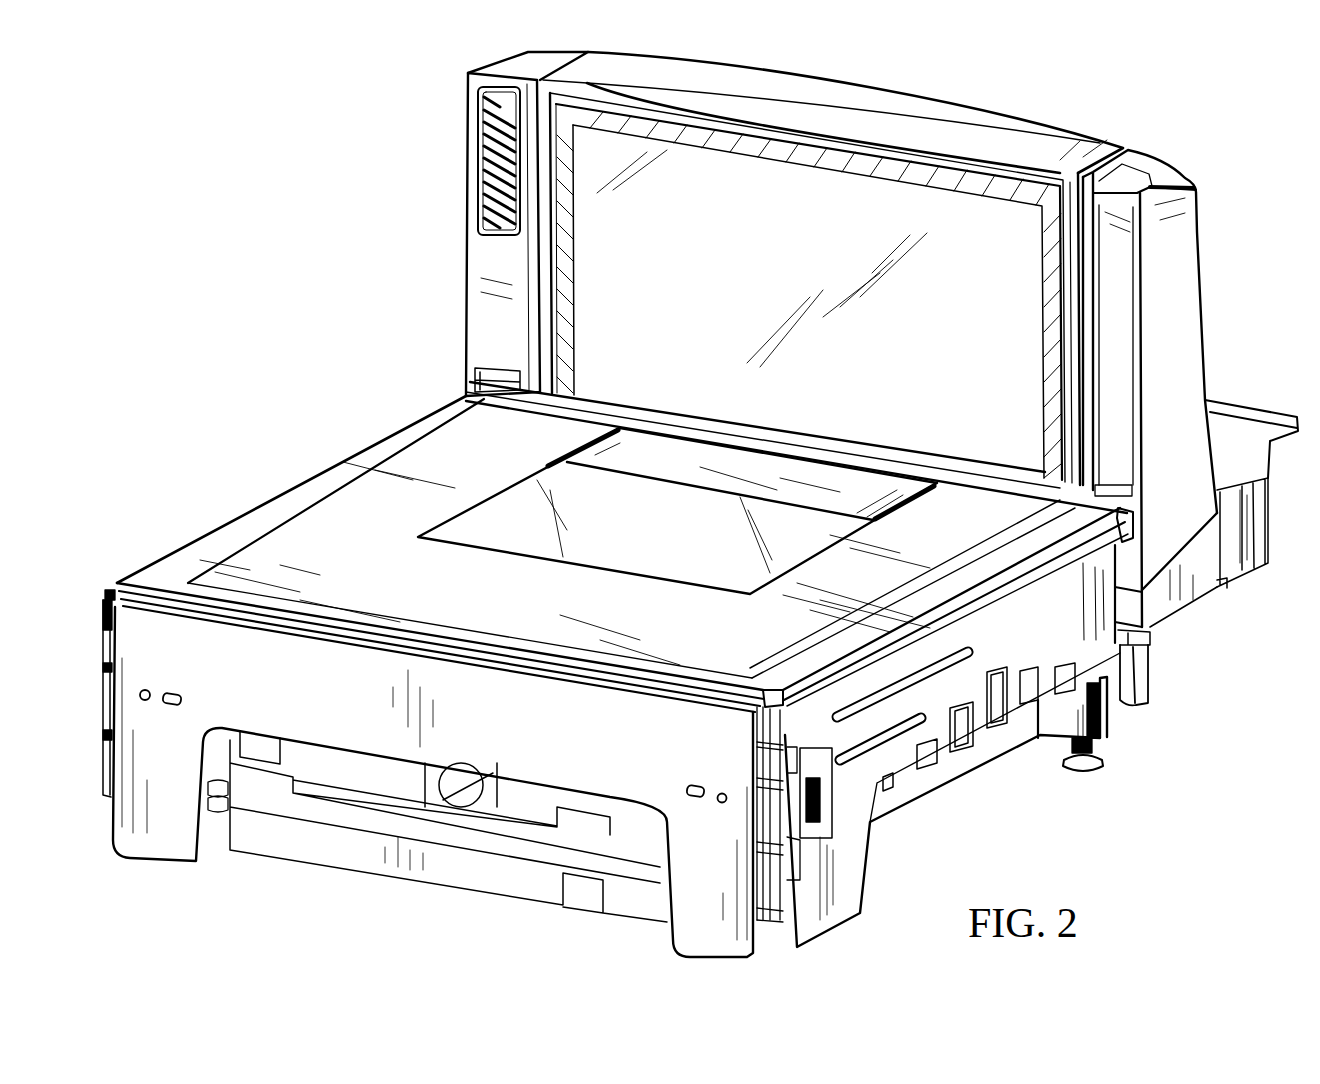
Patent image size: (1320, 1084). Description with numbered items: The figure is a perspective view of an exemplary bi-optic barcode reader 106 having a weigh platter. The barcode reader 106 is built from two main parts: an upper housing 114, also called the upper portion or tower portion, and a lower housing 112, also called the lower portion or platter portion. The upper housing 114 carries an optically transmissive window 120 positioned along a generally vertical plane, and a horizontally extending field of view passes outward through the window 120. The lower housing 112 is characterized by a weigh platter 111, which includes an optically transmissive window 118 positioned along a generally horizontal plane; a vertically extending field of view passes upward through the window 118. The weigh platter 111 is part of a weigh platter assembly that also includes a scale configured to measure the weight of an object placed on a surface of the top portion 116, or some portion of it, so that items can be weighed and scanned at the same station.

The barcode reader 106 is at (1201, 149).
The upper housing 114 is at (875, 85).
The top portion 116 is at (432, 389).
The weigh platter 111 is at (298, 490).
The lower housing 112 is at (1158, 750).
The optically transmissive window 118 is at (689, 536).
The optically transmissive window 120 is at (838, 284).